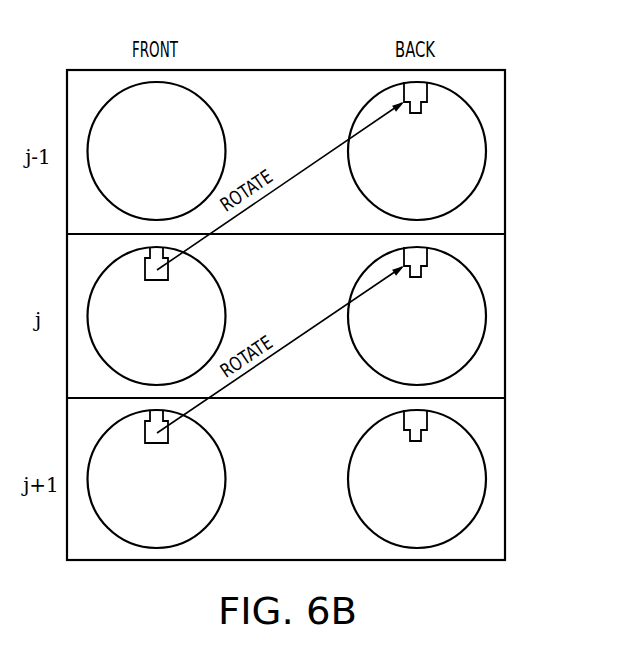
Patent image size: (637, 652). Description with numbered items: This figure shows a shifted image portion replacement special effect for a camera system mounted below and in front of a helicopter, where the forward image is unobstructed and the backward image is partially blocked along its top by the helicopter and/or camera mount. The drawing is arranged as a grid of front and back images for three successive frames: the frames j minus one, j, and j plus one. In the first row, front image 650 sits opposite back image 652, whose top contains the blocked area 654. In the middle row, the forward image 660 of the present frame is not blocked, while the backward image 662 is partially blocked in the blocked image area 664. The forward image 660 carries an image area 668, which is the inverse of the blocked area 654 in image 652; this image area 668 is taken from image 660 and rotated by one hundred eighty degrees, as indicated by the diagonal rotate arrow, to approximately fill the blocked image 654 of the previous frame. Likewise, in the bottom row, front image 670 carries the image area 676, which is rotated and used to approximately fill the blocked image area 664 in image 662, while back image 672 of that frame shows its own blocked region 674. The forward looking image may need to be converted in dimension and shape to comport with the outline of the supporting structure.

The front side of article at position j-1 650 is at (225, 153).
The image 652 is at (357, 113).
The blocked area 654 is at (415, 113).
The forward image 660 is at (225, 317).
The backward image 662 is at (357, 274).
The blocked image area 664 is at (415, 277).
The image area 668 is at (157, 280).
The front side of article at position j+1 670 is at (225, 481).
The back side of article at position j+1 672 is at (357, 439).
The orientation marker on back side at position j+1 674 is at (417, 441).
The image area 676 is at (157, 443).